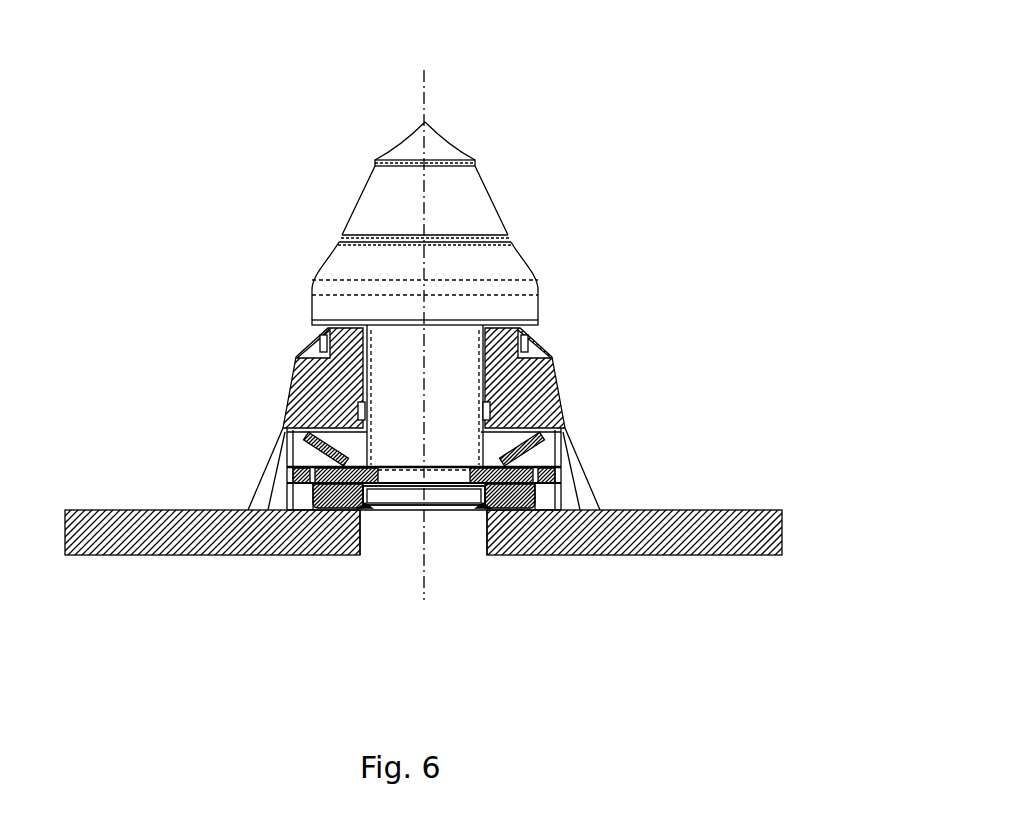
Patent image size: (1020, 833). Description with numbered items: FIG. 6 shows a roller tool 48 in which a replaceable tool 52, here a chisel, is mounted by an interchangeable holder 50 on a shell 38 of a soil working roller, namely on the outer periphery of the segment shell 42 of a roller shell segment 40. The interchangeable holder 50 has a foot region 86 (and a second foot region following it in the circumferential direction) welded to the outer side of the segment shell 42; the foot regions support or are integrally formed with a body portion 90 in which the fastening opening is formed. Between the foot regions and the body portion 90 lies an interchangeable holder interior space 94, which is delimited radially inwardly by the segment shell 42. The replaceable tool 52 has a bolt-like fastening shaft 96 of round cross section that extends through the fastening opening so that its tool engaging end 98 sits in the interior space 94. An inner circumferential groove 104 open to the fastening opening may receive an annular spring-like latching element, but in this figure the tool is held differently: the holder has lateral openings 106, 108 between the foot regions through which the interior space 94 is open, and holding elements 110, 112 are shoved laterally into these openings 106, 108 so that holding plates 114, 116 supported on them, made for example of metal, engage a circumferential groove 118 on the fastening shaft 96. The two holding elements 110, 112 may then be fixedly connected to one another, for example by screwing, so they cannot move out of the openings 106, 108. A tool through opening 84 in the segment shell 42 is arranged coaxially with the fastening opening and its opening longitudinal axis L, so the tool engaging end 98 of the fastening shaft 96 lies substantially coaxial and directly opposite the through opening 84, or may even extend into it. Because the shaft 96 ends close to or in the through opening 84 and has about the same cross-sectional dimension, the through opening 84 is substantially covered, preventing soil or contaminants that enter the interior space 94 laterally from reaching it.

The cutting tool 48 is at (397, 180).
The replaceable tool 52 is at (488, 184).
The fastening shaft 96 is at (460, 377).
The interchangeable holder 50 is at (510, 445).
The body portion 90 is at (295, 353).
The inner circumferential groove 104 is at (360, 408).
The holding element 110 is at (288, 453).
The holding plate 114 is at (285, 473).
The holding element 112 is at (562, 448).
The holding plate 116 is at (540, 475).
The tool engaging end 98 is at (470, 492).
The opening 106 is at (237, 474).
The opening 108 is at (596, 456).
The foot region 86 is at (595, 490).
The interchangeable holder interior space 94 is at (578, 490).
The circumferential groove 118 is at (395, 475).
The base 38 is at (510, 490).
The segment shell 42 is at (760, 537).
The roller shell segment 40 is at (700, 555).
The tool through opening 84 is at (387, 542).
The opening longitudinal axis L is at (424, 580).